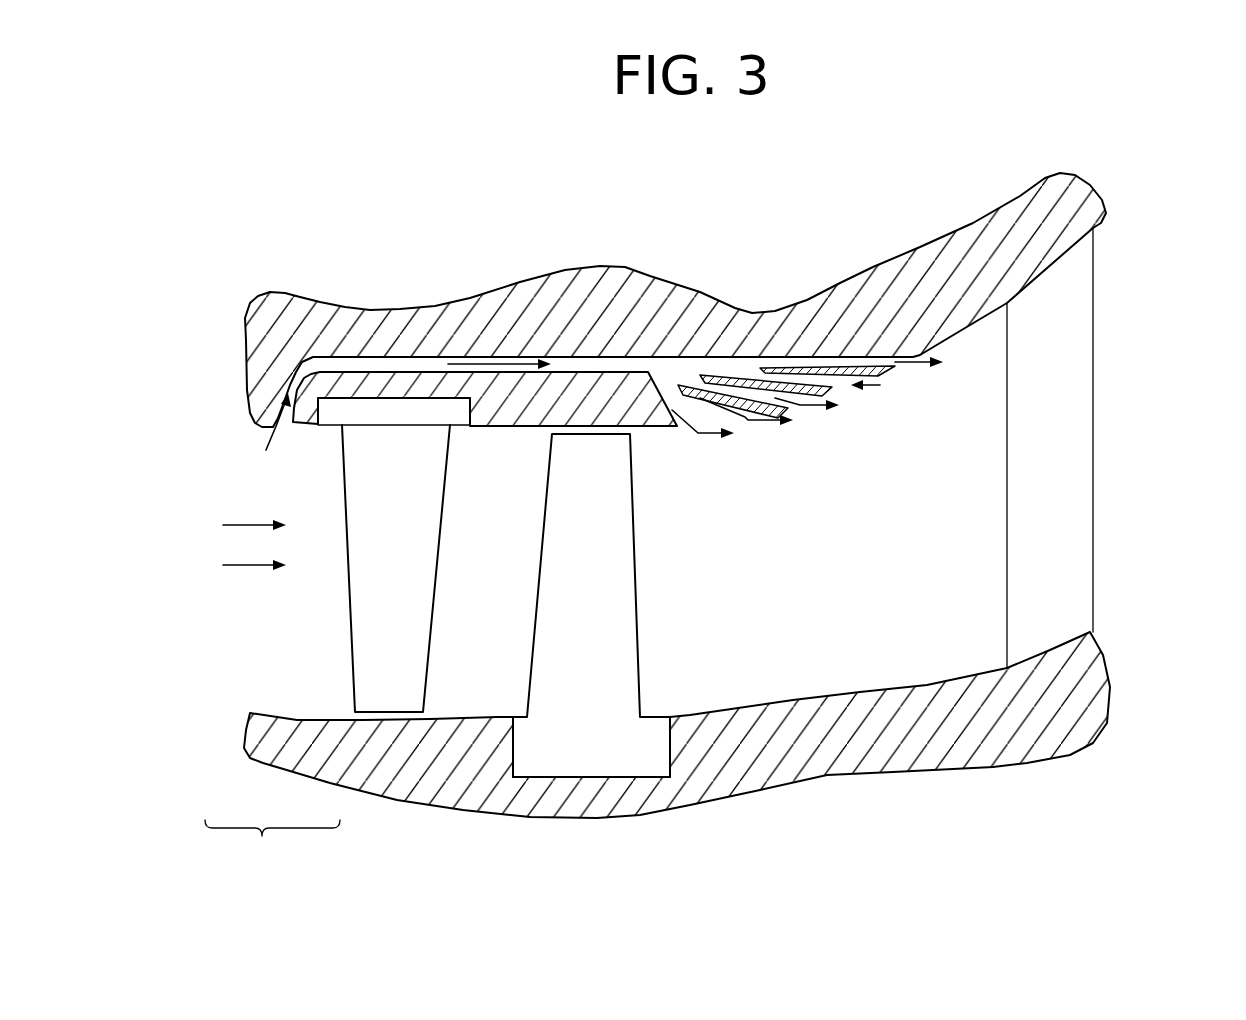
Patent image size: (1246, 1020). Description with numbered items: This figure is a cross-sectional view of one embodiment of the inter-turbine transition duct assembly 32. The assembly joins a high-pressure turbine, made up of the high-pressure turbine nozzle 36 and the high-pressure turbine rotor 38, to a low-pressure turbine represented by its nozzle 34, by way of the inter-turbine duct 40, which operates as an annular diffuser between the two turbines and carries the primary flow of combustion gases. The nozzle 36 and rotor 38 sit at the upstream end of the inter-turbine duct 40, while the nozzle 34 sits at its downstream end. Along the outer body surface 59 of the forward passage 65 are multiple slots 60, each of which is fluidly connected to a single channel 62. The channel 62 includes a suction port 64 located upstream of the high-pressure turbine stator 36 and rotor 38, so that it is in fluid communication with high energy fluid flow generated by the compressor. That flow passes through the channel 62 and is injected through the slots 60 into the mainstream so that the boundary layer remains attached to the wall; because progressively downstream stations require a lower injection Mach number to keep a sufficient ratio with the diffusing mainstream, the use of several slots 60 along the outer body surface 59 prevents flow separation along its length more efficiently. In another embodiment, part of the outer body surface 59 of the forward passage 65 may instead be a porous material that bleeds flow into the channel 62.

The inter-turbine transition duct assembly 32 is at (416, 217).
The low-pressure turbine nozzle 34 is at (1094, 496).
The high-pressure turbine nozzle 36 is at (372, 552).
The high-pressure turbine rotor 38 is at (594, 580).
The inter-turbine duct 40 is at (836, 781).
The outer body surface 59 is at (948, 339).
The multiple slots 60 is at (858, 390).
The channel 62 is at (490, 355).
The suction port 64 is at (290, 423).
The forward passage 65 is at (272, 698).